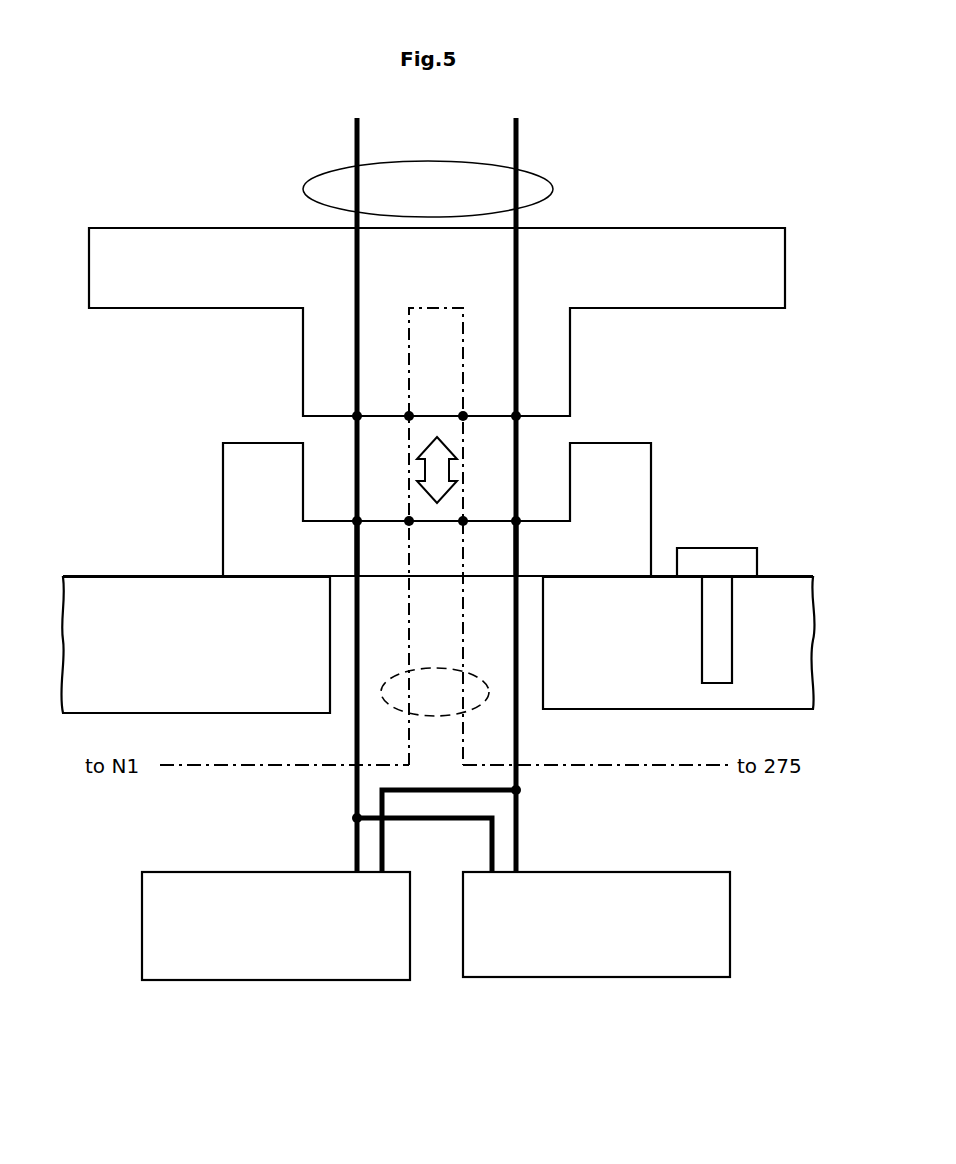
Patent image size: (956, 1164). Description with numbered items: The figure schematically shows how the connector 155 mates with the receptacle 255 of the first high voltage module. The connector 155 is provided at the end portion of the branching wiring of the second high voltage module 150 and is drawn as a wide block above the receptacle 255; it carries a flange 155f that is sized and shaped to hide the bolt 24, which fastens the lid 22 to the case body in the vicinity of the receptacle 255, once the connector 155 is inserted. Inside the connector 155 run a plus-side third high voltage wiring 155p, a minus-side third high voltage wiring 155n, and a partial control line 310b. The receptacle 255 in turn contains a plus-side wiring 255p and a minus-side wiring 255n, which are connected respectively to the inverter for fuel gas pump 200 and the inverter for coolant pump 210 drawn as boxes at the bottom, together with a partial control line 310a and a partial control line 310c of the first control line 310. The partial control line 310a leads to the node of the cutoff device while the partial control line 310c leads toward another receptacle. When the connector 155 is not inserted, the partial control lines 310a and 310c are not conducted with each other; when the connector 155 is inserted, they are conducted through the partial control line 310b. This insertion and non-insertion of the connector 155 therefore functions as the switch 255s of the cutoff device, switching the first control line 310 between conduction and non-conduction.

The lid 22 is at (183, 652).
The bolt 24 is at (722, 548).
The second high voltage module 150 is at (522, 168).
The connector 155 is at (590, 227).
The flange 155f is at (722, 226).
The plus-side third high voltage wiring 155p is at (355, 298).
The minus-side third high voltage wiring 155n is at (519, 298).
The receptacle 255 is at (652, 478).
The switch 255s is at (553, 434).
The plus-side wiring 255p is at (355, 570).
The minus-side wiring 255n is at (519, 568).
The first control line 310 is at (436, 668).
The partial control line 310a is at (180, 765).
The partial control line 310b is at (428, 308).
The partial control line 310c is at (615, 765).
The inverter for fuel gas pump 200 is at (708, 871).
The inverter for coolant pump 210 is at (154, 871).